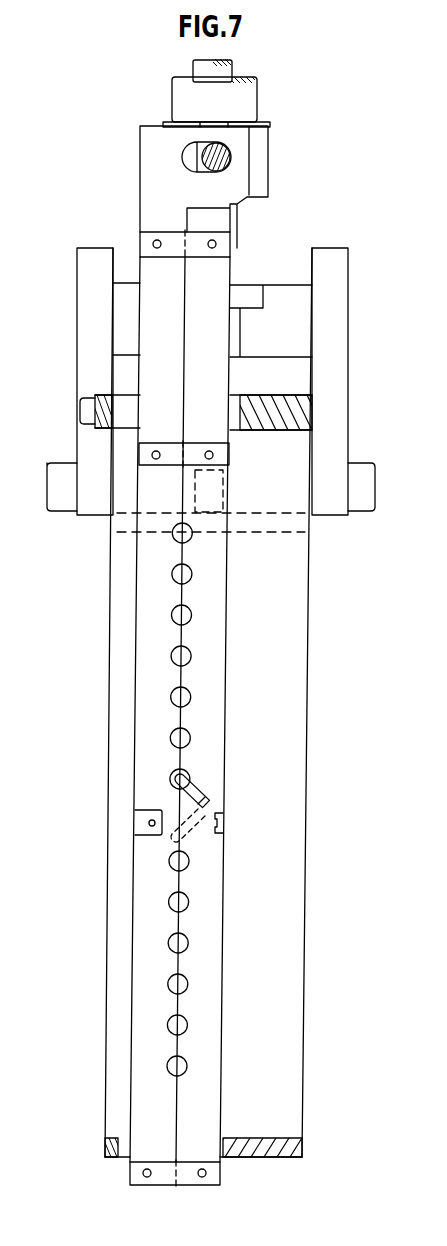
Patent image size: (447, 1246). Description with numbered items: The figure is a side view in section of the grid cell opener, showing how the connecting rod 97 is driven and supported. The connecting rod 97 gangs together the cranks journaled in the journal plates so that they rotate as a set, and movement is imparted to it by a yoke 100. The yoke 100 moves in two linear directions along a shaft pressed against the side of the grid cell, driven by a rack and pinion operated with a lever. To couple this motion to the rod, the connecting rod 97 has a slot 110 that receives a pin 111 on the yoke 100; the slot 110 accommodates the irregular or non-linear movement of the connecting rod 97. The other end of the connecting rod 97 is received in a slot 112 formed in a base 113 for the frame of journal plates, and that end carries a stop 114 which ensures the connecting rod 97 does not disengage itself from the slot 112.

The connecting rod 97 is at (215, 642).
The yoke 100 is at (264, 193).
The slot 110 is at (192, 166).
The pin 111 is at (230, 146).
The slot 112 is at (120, 1156).
The base 113 is at (263, 1156).
The stop 114 is at (182, 1180).